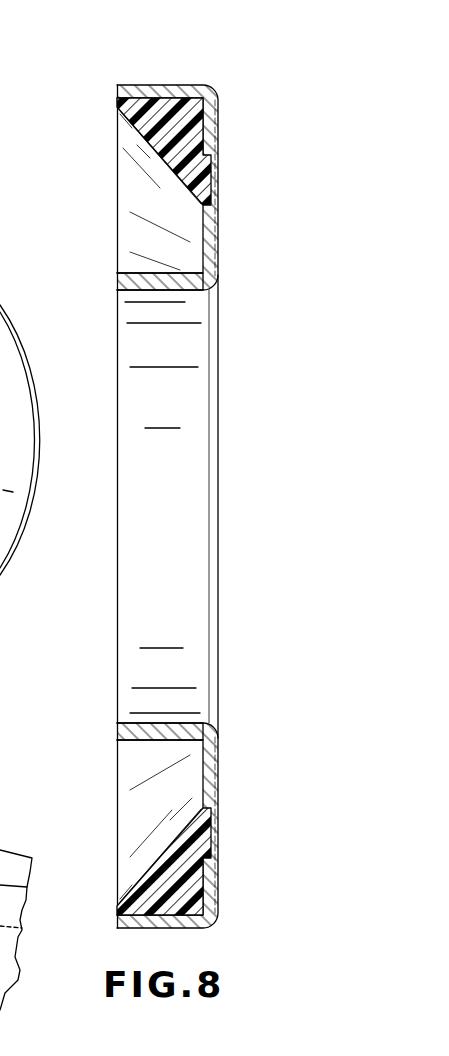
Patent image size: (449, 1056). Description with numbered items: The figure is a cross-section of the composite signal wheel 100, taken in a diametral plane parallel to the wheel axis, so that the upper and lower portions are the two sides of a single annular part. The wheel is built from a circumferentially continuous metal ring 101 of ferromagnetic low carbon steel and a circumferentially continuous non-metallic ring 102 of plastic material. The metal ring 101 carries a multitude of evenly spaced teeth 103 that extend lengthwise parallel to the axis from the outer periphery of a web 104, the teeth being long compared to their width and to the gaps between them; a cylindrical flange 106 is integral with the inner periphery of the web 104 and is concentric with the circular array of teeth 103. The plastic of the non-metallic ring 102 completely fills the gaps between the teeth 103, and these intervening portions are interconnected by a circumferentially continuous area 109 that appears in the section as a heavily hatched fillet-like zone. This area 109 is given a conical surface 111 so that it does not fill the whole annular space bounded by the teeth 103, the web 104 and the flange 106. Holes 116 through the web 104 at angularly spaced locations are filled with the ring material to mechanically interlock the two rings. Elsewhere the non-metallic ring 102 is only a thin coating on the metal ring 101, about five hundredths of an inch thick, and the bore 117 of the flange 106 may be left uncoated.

The composite signal wheel 100 is at (214, 72).
The metal ring 101 is at (217, 112).
The non-metallic ring 102 is at (157, 103).
The teeth 103 is at (122, 90).
The web 104 is at (210, 218).
The cylindrical flange 106 is at (172, 278).
The circumferentially continuous area 109 is at (133, 110).
The conical surface 111 is at (142, 186).
The holes 116 is at (210, 820).
The bore 117 is at (167, 723).